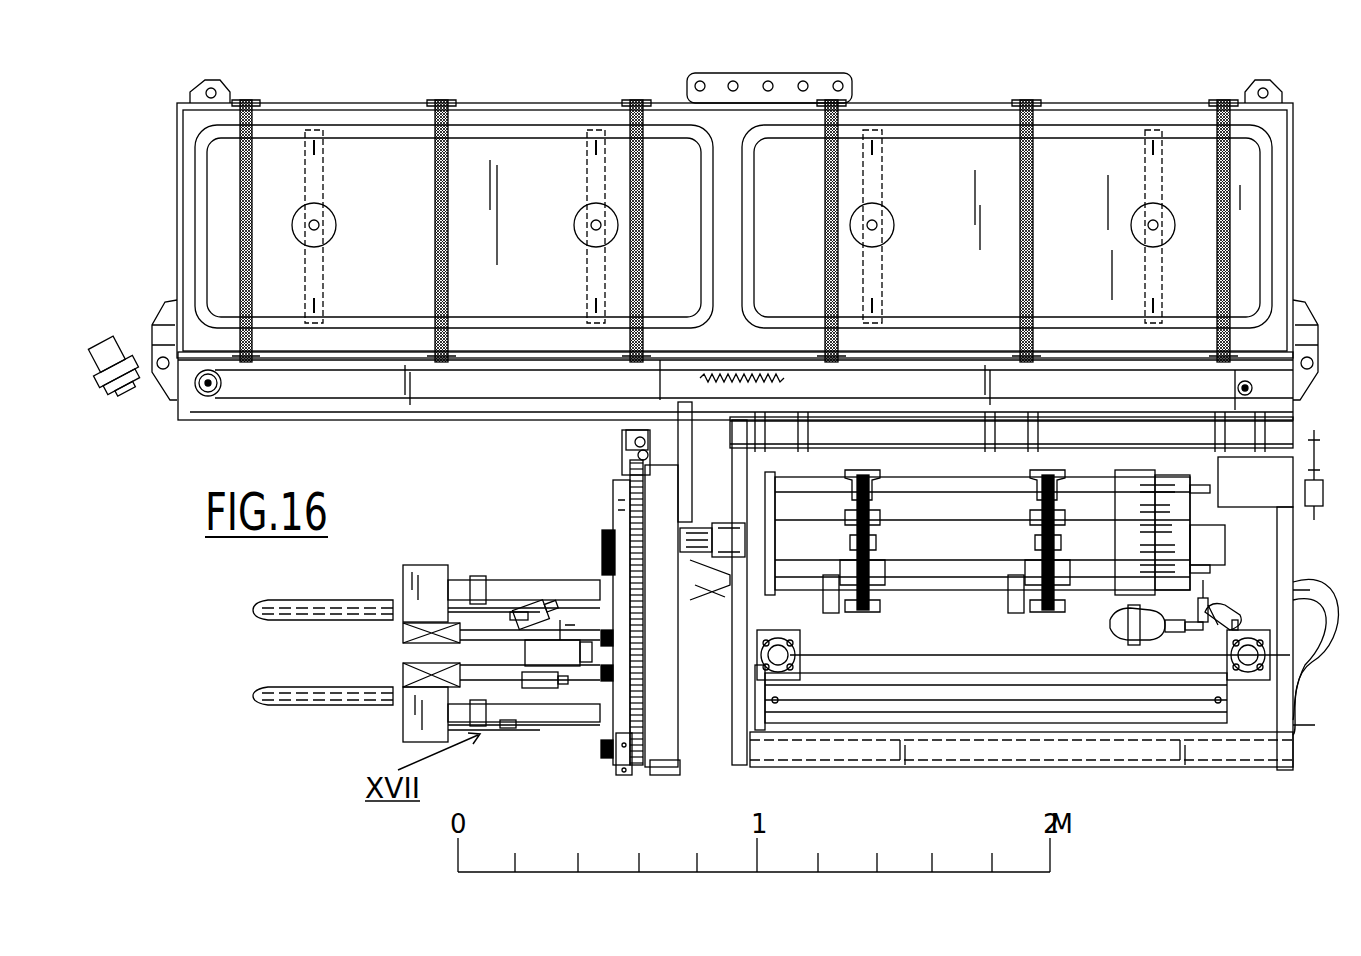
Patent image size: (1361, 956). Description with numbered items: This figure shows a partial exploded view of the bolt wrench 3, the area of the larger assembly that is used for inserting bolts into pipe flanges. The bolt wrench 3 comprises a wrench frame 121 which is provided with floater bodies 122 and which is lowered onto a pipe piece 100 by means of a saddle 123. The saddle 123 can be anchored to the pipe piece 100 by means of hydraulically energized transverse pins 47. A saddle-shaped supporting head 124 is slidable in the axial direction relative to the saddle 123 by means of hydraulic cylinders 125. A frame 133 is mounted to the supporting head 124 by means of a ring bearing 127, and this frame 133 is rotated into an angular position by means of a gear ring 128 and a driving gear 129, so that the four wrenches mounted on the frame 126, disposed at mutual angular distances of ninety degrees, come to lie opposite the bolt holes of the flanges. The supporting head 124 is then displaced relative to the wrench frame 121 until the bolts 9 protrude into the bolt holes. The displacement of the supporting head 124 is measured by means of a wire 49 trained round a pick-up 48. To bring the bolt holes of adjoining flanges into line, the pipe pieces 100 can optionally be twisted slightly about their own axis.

The bolt wrench 3 is at (1189, 88).
The floater bodies 122 is at (492, 118).
The wrench frame 121 is at (530, 410).
The wire 49 is at (365, 400).
The pick-up 48 is at (198, 393).
The saddle-shaped supporting head 124 is at (668, 755).
The ring bearing 127 is at (616, 513).
The gear ring 128 is at (613, 527).
The driving gear 129 is at (615, 432).
The frame 133 is at (598, 745).
The frame 126 is at (495, 588).
The bolts 9 is at (325, 690).
The transverse pins 47 is at (795, 652).
The hydraulic cylinders 125 is at (1075, 712).
The saddle 123 is at (845, 748).
The pipe piece 100 is at (1305, 587).